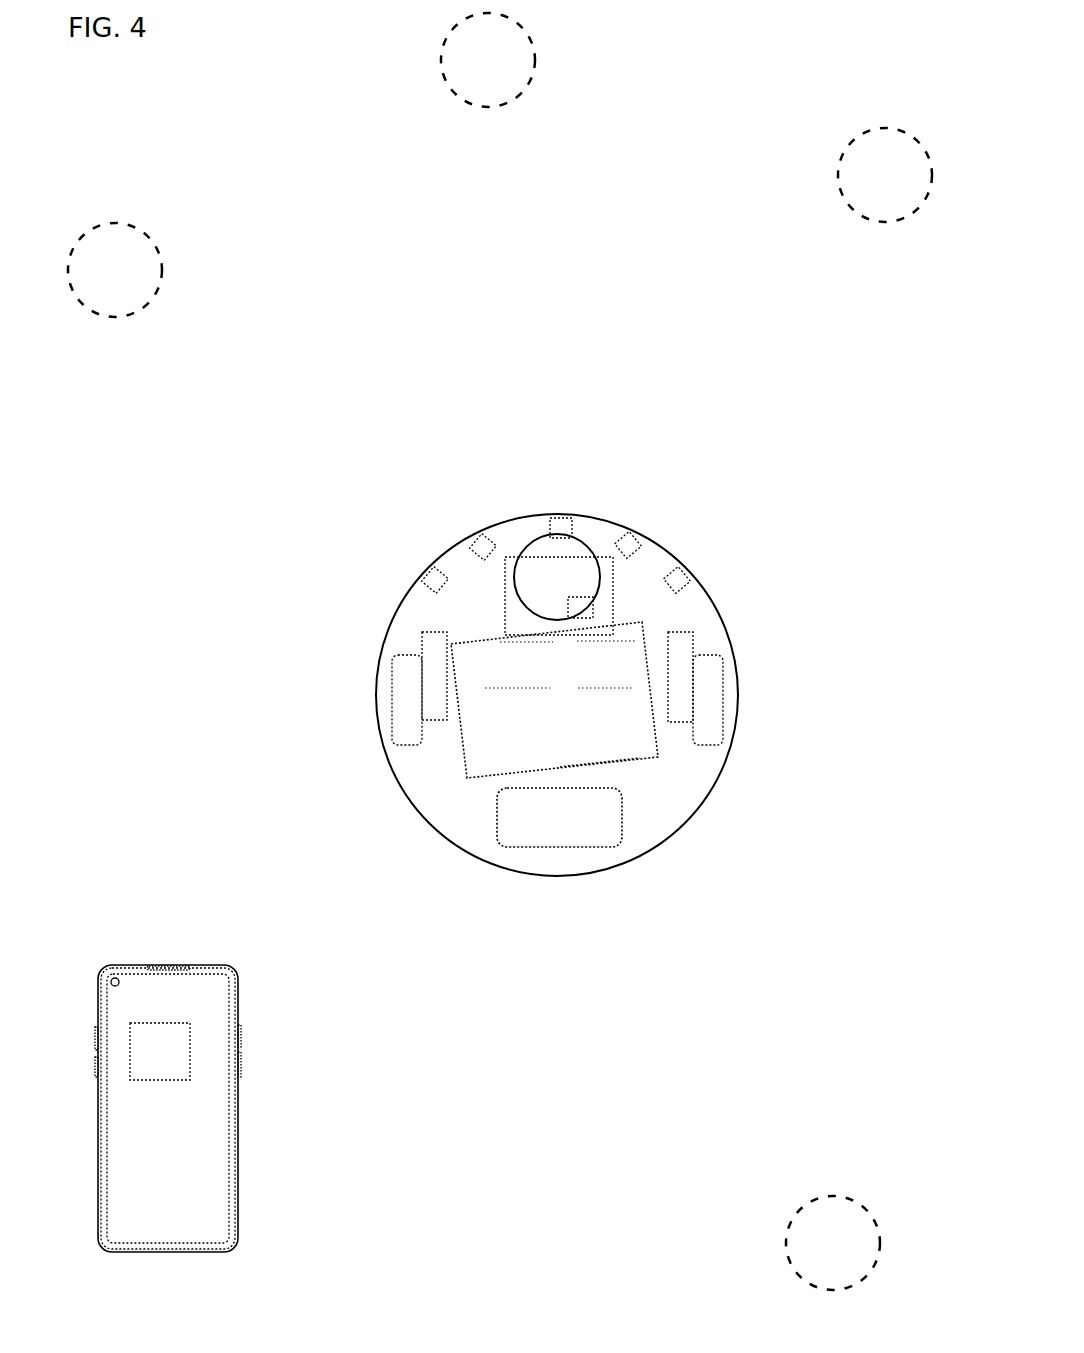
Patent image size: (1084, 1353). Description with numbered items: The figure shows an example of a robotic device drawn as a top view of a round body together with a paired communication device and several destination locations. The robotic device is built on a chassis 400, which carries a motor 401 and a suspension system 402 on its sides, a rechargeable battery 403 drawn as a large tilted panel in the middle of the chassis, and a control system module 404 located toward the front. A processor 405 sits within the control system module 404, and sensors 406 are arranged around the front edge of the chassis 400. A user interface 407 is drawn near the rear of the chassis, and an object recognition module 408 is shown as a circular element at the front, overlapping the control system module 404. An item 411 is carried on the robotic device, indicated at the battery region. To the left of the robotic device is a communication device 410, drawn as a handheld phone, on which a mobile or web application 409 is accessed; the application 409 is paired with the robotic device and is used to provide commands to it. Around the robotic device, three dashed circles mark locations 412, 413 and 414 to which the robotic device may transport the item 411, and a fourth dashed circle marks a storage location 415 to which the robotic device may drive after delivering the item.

The chassis 400 is at (687, 820).
The motor 401 is at (715, 728).
The suspension system 402 is at (685, 640).
The rechargeable battery 403 is at (548, 690).
The control system module 404 is at (505, 608).
The processor 405 is at (592, 613).
The sensors 406 is at (631, 543).
The user interface 407 is at (543, 833).
The object recognition module 408 is at (523, 545).
The mobile or web application 409 is at (147, 1022).
The communication device 410 is at (207, 965).
The item 411 is at (592, 768).
The location 412 is at (885, 175).
The location 413 is at (115, 270).
The location 414 is at (488, 60).
The storage location 415 is at (833, 1243).